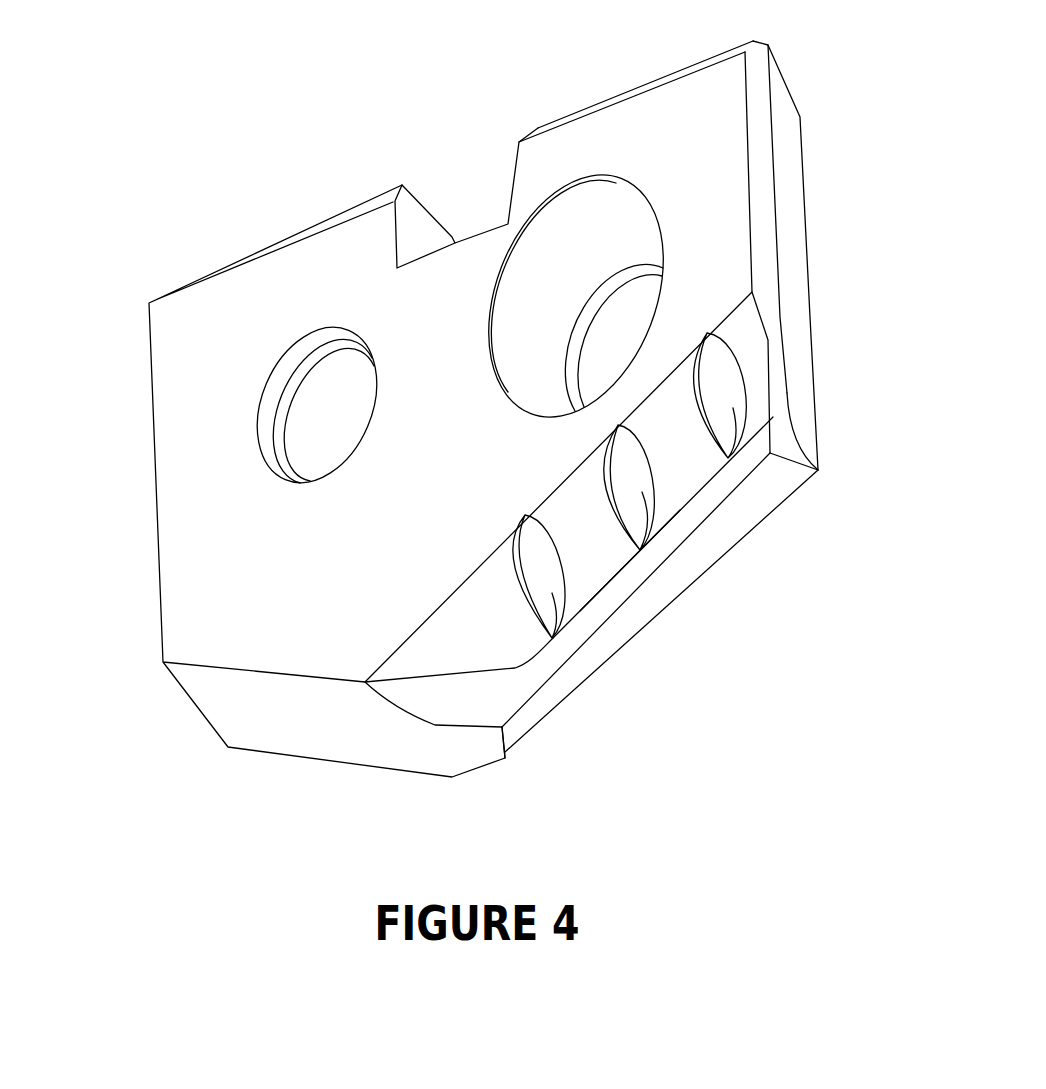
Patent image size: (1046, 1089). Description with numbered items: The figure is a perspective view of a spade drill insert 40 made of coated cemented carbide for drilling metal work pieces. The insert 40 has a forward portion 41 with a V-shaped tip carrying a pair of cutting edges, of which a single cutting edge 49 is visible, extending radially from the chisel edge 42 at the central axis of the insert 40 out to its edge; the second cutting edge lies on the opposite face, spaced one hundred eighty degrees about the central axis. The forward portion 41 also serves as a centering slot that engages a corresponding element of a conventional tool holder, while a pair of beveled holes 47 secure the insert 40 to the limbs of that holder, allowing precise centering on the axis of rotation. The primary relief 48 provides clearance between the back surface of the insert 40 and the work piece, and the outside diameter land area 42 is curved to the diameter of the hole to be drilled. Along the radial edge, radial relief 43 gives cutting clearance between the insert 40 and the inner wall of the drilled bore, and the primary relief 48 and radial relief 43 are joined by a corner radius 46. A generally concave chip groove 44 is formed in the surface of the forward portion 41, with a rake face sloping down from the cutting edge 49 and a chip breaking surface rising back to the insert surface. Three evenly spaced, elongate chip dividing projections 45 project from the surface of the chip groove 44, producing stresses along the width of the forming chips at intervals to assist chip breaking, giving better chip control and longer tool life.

The spade drill insert 40 is at (236, 197).
The forward portion 41 is at (410, 212).
The chisel edge 42 is at (760, 87).
The radial relief 43 is at (793, 152).
The chip groove 44 is at (757, 330).
The chip dividing projections 45 is at (733, 408).
The corner radius 46 is at (793, 453).
The beveled holes 47 is at (572, 217).
The primary relief 48 is at (770, 497).
The cutting edge 49 is at (602, 570).